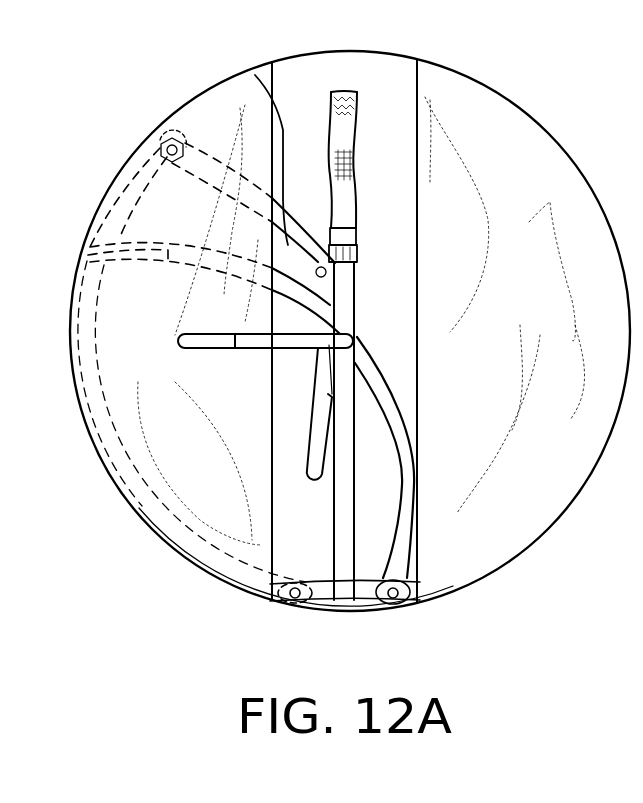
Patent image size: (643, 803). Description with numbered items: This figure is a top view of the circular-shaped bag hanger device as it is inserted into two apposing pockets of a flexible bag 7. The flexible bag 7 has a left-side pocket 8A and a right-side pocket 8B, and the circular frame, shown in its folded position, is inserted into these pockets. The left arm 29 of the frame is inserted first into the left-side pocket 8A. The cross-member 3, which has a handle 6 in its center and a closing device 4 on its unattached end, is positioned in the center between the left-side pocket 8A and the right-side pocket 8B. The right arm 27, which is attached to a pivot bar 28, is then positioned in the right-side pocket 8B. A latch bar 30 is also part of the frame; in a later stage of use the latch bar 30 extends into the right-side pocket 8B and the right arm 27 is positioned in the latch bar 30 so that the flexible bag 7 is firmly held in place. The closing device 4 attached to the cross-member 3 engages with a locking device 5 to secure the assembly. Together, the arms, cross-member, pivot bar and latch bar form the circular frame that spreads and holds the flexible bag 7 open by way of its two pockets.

The cross-member 3 is at (345, 596).
The closing device 4 is at (343, 132).
The locking device 5 is at (319, 267).
The handle 6 is at (183, 338).
The flexible bag 7 is at (553, 176).
The left-side pocket 8A is at (227, 503).
The right-side pocket 8B is at (458, 478).
The right arm 27 is at (402, 550).
The pivot bar 28 is at (327, 600).
The left arm 29 is at (103, 430).
The latch bar 30 is at (262, 82).